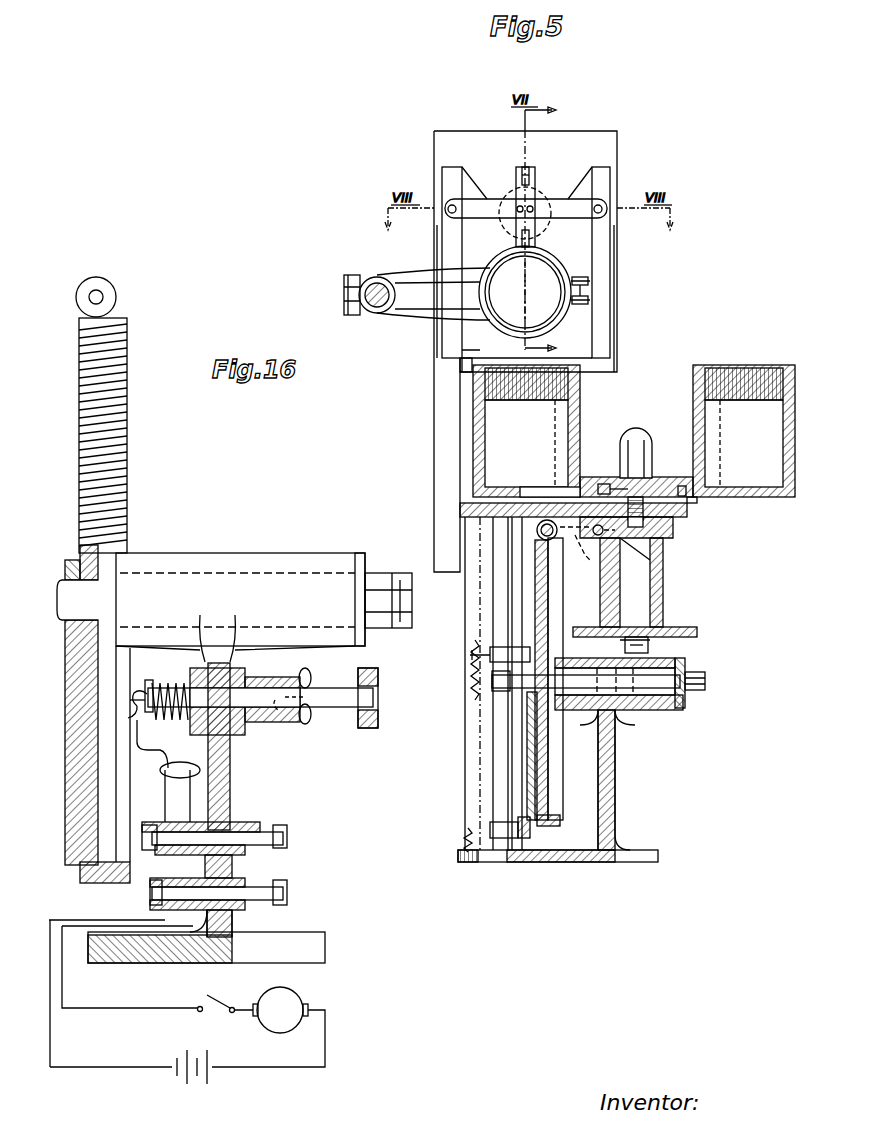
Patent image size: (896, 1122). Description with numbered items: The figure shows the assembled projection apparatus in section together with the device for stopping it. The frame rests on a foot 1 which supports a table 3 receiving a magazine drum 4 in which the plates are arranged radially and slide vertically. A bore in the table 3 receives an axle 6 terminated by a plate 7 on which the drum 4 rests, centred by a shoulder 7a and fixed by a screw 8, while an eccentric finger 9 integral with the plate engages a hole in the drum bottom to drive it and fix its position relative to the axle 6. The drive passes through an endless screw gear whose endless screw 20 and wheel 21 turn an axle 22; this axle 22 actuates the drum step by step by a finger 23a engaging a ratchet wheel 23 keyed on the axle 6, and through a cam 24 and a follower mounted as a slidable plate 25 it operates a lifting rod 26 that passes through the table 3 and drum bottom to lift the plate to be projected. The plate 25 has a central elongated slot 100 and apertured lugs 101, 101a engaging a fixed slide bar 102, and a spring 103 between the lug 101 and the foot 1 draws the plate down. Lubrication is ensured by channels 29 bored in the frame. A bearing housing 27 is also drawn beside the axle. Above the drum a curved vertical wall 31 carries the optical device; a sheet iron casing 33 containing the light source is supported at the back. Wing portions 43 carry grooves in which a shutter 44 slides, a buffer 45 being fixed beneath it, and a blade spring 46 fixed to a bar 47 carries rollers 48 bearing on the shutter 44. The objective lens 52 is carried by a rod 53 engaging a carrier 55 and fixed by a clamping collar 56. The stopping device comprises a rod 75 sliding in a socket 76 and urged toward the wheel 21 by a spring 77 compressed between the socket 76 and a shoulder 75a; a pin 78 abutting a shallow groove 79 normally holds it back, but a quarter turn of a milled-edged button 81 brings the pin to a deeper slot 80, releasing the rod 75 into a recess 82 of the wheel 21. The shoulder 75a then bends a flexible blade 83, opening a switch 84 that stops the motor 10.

In FIG. 5, the sheet iron casing 33 is at (606, 149).
In FIG. 5, the curved vertical wall 31 is at (462, 440).
In FIG. 5, the wing portions 43 is at (600, 240).
In FIG. 5, the bar 47 is at (486, 199).
In FIG. 5, the blade spring 46 is at (535, 197).
In FIG. 5, the rollers 48 is at (528, 170).
In FIG. 5, the objective lens 52 is at (534, 292).
In FIG. 5, the carrier 55 is at (398, 272).
In FIG. 5, the rod 53 is at (377, 312).
In FIG. 5, the clamping collar 56 is at (344, 277).
In FIG. 5, the shutter 44 is at (578, 340).
In FIG. 5, the buffer 45 is at (470, 365).
In FIG. 5, the magazine drum 4 is at (790, 465).
In FIG. 5, the table 3 is at (542, 488).
In FIG. 5, the screw 8 is at (636, 432).
In FIG. 5, the shoulder 7a is at (657, 462).
In FIG. 5, the eccentric finger 9 is at (680, 485).
In FIG. 5, the plate 7 is at (690, 500).
In FIG. 5, the endless screw 20 is at (537, 532).
In FIG. 16, the endless screw 20 is at (77, 300).
In FIG. 5, the channels 29 is at (597, 540).
In FIG. 5, the wheel 21 is at (535, 540).
In FIG. 16, the wheel 21 is at (79, 412).
In FIG. 5, the lifting rod 26 is at (520, 605).
In FIG. 5, the axle 6 is at (660, 570).
In FIG. 5, the ratchet wheel 23 is at (688, 627).
In FIG. 5, the bearing housing 27 is at (684, 660).
In FIG. 5, the axle 22 is at (655, 700).
In FIG. 16, the axle 22 is at (245, 558).
In FIG. 5, the finger 23a is at (615, 775).
In FIG. 5, the foot 1 is at (634, 850).
In FIG. 5, the cam 24 is at (527, 770).
In FIG. 16, the cam 24 is at (65, 770).
In FIG. 5, the central elongated slot 100 is at (522, 742).
In FIG. 5, the fixed slide bar 102 is at (500, 797).
In FIG. 5, the slidable plate 25 is at (518, 805).
In FIG. 5, the apertured lug 101 is at (492, 648).
In FIG. 5, the spring 103 is at (470, 680).
In FIG. 5, the apertured lug 101a is at (503, 840).
In FIG. 16, the rod 75 is at (335, 707).
In FIG. 16, the milled-edged button 81 is at (378, 718).
In FIG. 16, the socket 76 is at (288, 725).
In FIG. 16, the pin 78 is at (312, 680).
In FIG. 16, the shallow groove 79 is at (305, 670).
In FIG. 16, the deeper slot 80 is at (290, 670).
In FIG. 16, the spring 77 is at (176, 680).
In FIG. 16, the shoulder 75a is at (130, 700).
In FIG. 16, the recess 82 is at (128, 716).
In FIG. 16, the flexible blade 83 is at (140, 740).
In FIG. 16, the switch 84 is at (180, 762).
In FIG. 16, the motor 10 is at (300, 996).